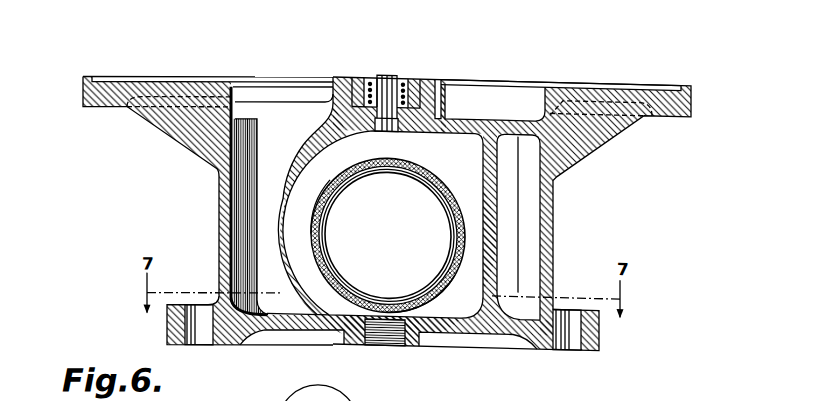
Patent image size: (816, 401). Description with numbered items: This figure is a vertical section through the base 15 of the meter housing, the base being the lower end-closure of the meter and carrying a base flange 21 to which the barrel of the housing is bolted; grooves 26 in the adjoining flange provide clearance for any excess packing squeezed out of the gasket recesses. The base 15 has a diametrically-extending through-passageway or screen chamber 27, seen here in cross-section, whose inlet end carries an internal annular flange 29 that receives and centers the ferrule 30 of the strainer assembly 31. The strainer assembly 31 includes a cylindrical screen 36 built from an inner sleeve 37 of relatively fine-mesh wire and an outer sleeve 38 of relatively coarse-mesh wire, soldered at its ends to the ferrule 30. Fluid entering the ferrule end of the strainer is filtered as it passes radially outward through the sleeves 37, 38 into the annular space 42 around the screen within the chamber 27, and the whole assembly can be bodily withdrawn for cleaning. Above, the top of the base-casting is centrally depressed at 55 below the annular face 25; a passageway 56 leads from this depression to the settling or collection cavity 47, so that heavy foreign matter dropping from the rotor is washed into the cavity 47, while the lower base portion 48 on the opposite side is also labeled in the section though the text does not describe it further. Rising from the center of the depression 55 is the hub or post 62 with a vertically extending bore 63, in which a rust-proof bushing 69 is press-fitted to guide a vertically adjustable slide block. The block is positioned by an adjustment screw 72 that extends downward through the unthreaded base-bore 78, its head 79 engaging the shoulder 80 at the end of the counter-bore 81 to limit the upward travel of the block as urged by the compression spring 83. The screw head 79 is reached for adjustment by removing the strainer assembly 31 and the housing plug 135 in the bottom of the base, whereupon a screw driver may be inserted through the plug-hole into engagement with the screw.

The base 15 is at (684, 98).
The base flange 21 is at (97, 93).
The annular face 25 is at (612, 78).
The grooves 26 is at (660, 108).
The screen chamber 27 is at (343, 311).
The annular flange 29 is at (304, 230).
The ferrule 30 is at (343, 180).
The strainer assembly 31 is at (436, 298).
The cylindrical screen 36 is at (429, 170).
The inner sleeve 37 is at (397, 168).
The outer sleeve 38 is at (395, 158).
The annular space 42 is at (466, 199).
The collection cavity 47 is at (260, 328).
The right base foot 48 is at (494, 311).
The depression 55 is at (484, 103).
The passageway 56 is at (263, 196).
The hub 62 is at (428, 77).
The bore 63 is at (357, 78).
The bushing 69 is at (368, 77).
The adjustment screw 72 is at (396, 77).
The base-bore 78 is at (386, 76).
The head 79 is at (414, 109).
The shoulder 80 is at (347, 77).
The counter-bore 81 is at (384, 128).
The compression spring 83 is at (405, 77).
The housing plug 135 is at (384, 338).